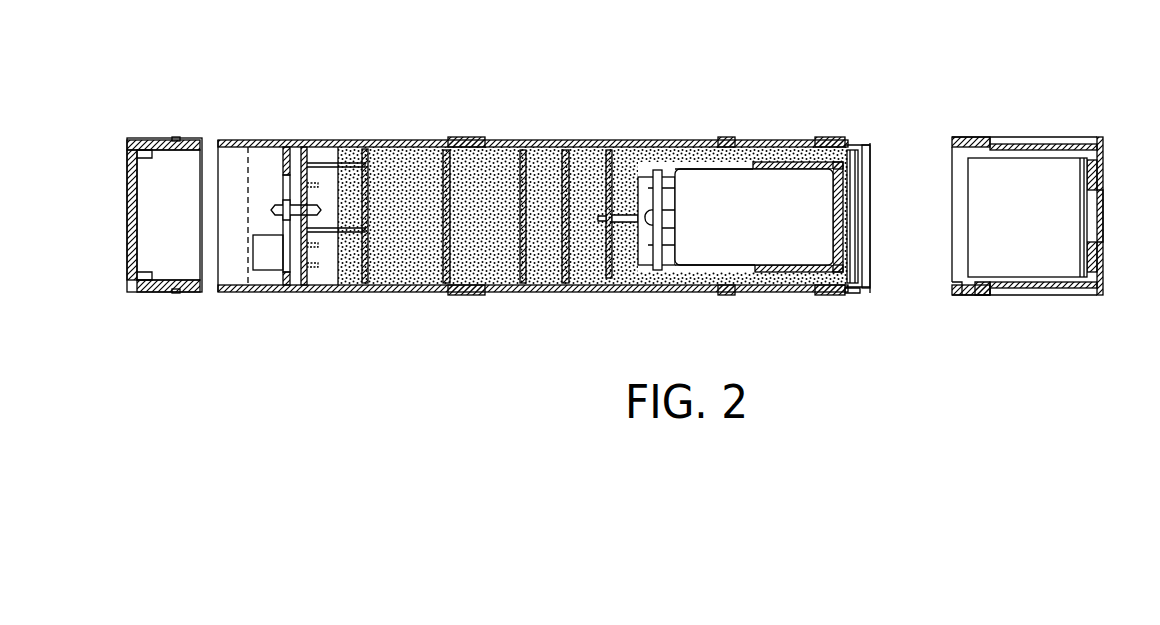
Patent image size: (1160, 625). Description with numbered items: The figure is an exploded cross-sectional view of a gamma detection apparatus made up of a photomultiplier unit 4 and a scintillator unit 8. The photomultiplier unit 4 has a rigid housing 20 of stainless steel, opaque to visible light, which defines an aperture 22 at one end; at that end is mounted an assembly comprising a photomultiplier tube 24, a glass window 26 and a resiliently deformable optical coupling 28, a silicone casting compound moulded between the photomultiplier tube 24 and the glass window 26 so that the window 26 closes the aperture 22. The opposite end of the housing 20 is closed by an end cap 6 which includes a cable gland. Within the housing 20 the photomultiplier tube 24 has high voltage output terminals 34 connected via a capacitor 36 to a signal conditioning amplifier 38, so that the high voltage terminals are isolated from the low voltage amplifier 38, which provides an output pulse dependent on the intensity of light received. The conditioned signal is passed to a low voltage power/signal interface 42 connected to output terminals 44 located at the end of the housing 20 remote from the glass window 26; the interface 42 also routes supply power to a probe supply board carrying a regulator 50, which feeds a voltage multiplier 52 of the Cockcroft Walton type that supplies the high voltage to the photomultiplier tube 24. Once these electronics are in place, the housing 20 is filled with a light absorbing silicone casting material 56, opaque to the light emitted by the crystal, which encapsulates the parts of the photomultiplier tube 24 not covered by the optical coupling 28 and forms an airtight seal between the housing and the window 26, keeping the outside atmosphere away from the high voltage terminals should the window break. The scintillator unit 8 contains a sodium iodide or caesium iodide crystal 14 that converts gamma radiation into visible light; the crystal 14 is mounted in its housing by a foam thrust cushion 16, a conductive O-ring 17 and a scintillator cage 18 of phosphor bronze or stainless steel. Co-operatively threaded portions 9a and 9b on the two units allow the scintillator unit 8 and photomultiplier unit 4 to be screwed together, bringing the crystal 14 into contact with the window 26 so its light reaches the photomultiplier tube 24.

The photomultiplier unit 4 is at (477, 138).
The end cap 6 is at (127, 287).
The scintillator unit 8 is at (1039, 137).
The threaded portion 9a is at (850, 296).
The threaded portion 9b is at (954, 292).
The crystal 14 is at (1019, 268).
The foam thrust cushion 16 is at (1102, 230).
The conductive O-ring 17 is at (981, 297).
The scintillator cage 18 is at (1060, 288).
The rigid housing 20 is at (758, 140).
The aperture 22 is at (868, 283).
The photomultiplier tube 24 is at (705, 195).
The glass window 26 is at (858, 225).
The optical coupling 28 is at (835, 137).
The high voltage output terminals 34 is at (610, 150).
The capacitor 36 is at (565, 150).
The signal conditioning amplifier 38 is at (523, 292).
The power/signal interface 42 is at (287, 288).
The output terminals 44 is at (268, 167).
The 5V DC regulator 50 is at (306, 287).
The voltage multiplier 52 is at (365, 287).
The silicone casting material 56 is at (410, 167).